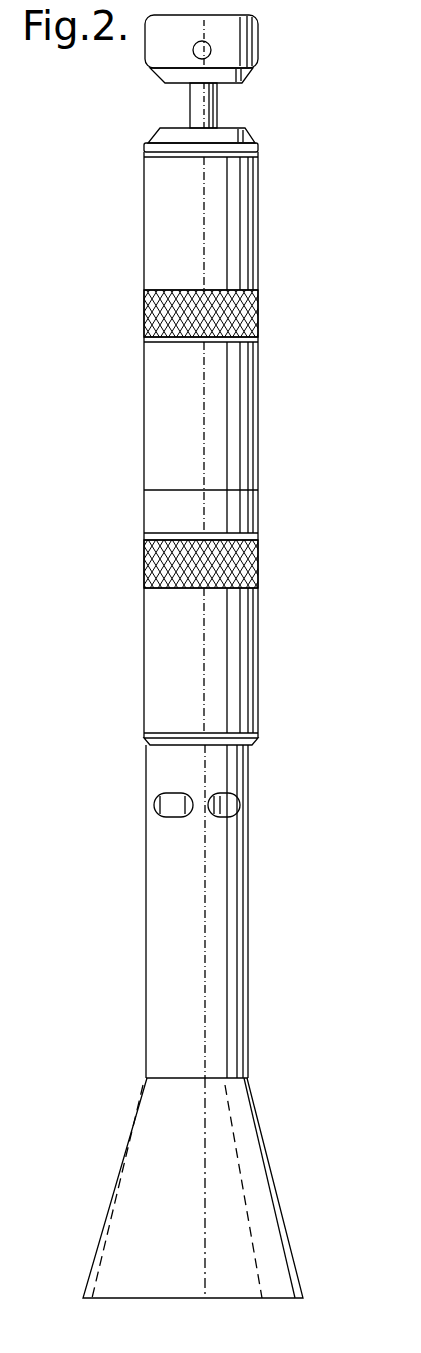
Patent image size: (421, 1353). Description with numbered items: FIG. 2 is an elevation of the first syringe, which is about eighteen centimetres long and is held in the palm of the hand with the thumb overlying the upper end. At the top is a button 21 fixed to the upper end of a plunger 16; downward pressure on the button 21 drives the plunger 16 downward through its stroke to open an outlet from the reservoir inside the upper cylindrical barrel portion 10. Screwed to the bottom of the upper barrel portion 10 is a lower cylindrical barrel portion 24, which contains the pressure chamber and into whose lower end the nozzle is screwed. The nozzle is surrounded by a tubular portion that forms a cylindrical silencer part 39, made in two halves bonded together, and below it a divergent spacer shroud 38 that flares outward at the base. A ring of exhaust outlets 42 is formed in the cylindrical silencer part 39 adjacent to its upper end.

The button 21 is at (248, 47).
The plunger 16 is at (213, 103).
The upper cylindrical barrel portion 10 is at (246, 262).
The lower cylindrical barrel portion 24 is at (244, 604).
The exhaust outlets 42 is at (228, 805).
The cylindrical silencer part 39 is at (228, 920).
The divergent spacer shroud 38 is at (248, 1168).